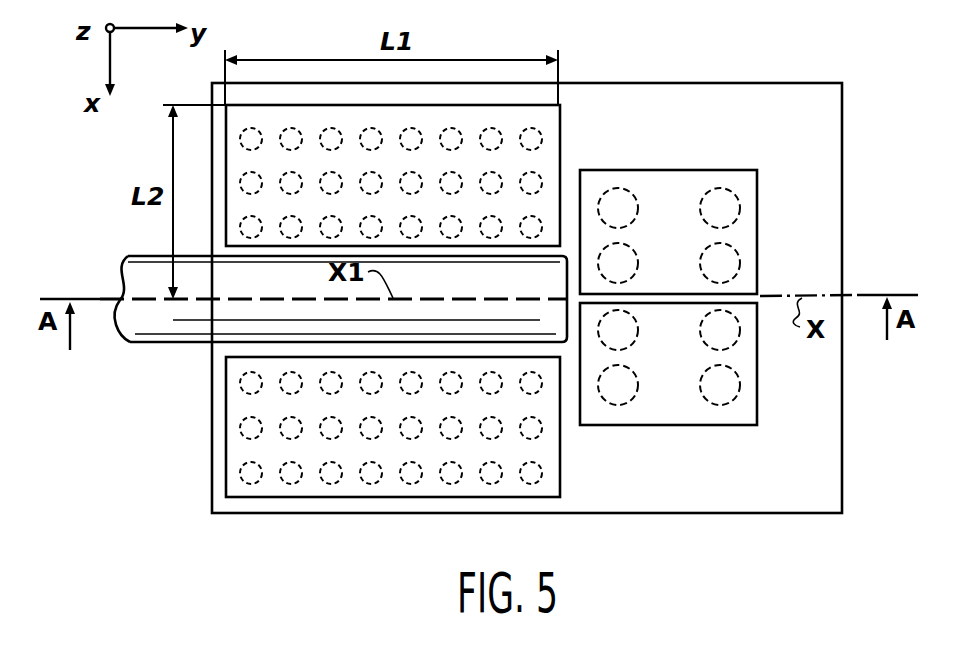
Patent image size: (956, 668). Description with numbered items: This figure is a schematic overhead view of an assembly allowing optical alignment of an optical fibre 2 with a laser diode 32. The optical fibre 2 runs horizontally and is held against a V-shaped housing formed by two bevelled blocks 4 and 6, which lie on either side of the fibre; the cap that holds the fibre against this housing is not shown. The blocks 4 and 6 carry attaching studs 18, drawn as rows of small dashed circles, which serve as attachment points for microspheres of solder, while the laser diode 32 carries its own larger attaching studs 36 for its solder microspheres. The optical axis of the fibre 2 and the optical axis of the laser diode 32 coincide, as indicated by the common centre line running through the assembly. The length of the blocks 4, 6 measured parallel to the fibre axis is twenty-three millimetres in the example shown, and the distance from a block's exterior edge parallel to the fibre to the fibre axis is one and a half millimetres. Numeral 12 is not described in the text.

The optical fibre 2 is at (176, 345).
The bevelled block 4 is at (560, 106).
The bevelled block 6 is at (312, 487).
The housing 12 is at (786, 492).
The attaching studs 18 is at (547, 219).
The laser diode 32 is at (688, 412).
The attaching studs 36 is at (634, 198).